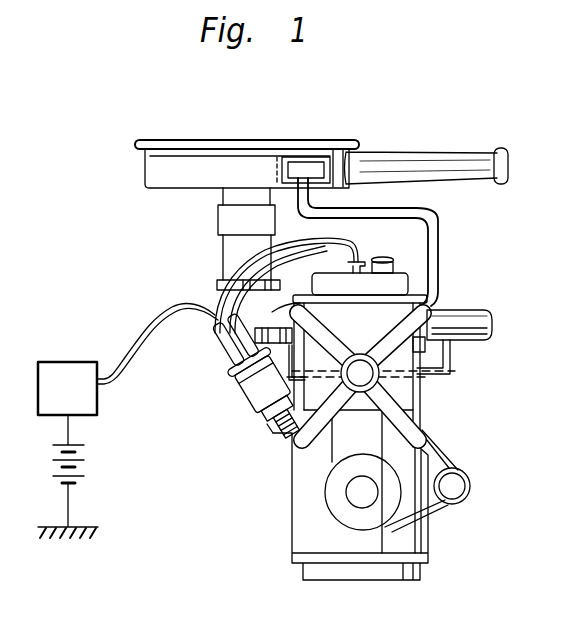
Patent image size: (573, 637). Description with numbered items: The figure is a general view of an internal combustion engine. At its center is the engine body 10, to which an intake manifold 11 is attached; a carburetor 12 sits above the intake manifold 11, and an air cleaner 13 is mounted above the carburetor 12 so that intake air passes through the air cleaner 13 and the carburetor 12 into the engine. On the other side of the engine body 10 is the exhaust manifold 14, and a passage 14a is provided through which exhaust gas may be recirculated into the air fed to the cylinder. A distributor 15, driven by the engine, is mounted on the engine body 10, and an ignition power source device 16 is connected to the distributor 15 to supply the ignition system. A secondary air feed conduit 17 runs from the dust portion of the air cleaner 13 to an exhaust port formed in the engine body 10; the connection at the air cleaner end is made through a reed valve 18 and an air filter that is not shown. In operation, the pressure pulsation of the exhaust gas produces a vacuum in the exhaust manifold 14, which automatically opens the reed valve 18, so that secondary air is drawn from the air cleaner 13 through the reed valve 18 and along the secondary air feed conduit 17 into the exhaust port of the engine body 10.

The engine body 10 is at (416, 537).
The intake manifold 11 is at (222, 308).
The carburetor 12 is at (218, 212).
The air cleaner 13 is at (218, 163).
The exhaust manifold 14 is at (466, 336).
The passage 14a is at (443, 378).
The distributor 15 is at (246, 386).
The ignition power source device 16 is at (57, 372).
The secondary air feed conduit 17 is at (439, 234).
The reed valve 18 is at (343, 168).